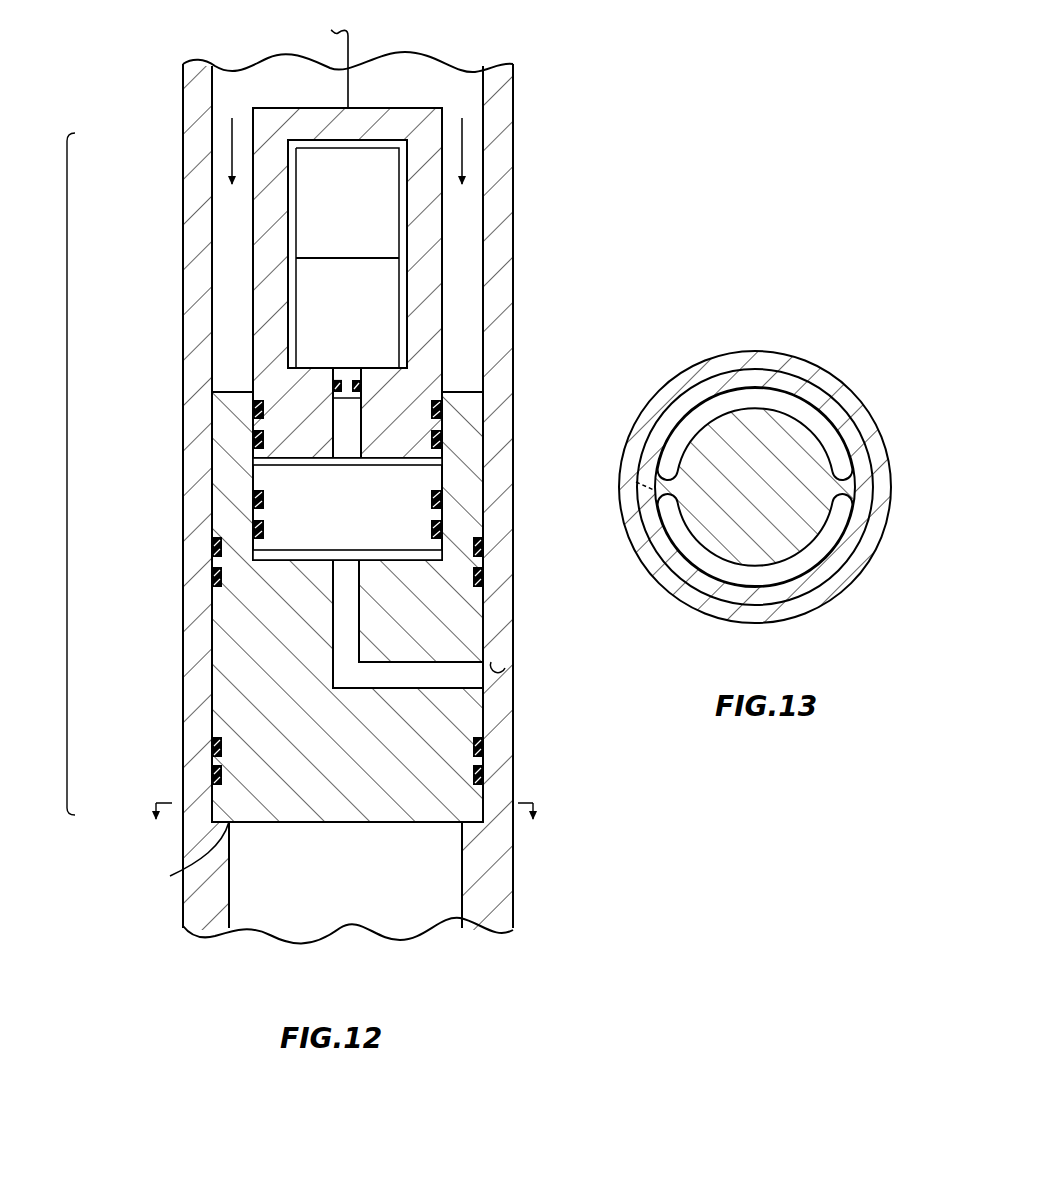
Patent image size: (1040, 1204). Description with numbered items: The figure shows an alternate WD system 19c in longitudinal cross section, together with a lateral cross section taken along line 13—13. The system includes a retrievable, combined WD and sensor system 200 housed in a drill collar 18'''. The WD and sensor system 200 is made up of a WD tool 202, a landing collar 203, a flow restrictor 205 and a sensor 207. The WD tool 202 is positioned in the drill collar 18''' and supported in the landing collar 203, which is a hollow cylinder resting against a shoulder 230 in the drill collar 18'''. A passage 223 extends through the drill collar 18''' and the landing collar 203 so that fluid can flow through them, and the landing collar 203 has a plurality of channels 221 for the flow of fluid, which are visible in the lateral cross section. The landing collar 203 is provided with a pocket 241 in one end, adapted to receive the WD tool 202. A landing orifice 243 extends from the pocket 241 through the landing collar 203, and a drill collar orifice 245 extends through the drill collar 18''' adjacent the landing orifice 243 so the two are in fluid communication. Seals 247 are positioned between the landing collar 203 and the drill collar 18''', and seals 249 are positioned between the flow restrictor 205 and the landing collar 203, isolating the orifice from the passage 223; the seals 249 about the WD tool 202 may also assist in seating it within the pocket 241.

In FIG. 12, the combined WD and sensor system 200 is at (42, 474).
In FIG. 12, the passage 223 is at (212, 150).
In FIG. 12, the WD tool 202 is at (292, 232).
In FIG. 12, the sensor 207 is at (292, 284).
In FIG. 12, the landing collar 203 is at (218, 683).
In FIG. 13, the landing collar 203 is at (738, 375).
In FIG. 12, the flow restrictor 205 is at (345, 508).
In FIG. 12, the pocket 241 is at (252, 477).
In FIG. 12, the seals 249 is at (262, 525).
In FIG. 12, the seals 247 is at (484, 550).
In FIG. 12, the landing orifice 243 is at (462, 692).
In FIG. 12, the drill collar orifice 245 is at (500, 668).
In FIG. 12, the shoulder 230 is at (170, 876).
In FIG. 13, the shoulder 230 is at (635, 488).
In FIG. 12, the WD system 19c is at (596, 82).
In FIG. 12, the drill collar 18''' is at (395, 498).
In FIG. 13, the drill collar 18''' is at (755, 456).
In FIG. 12, the line 13— 13 is at (349, 832).
In FIG. 13, the channels 221 is at (698, 410).